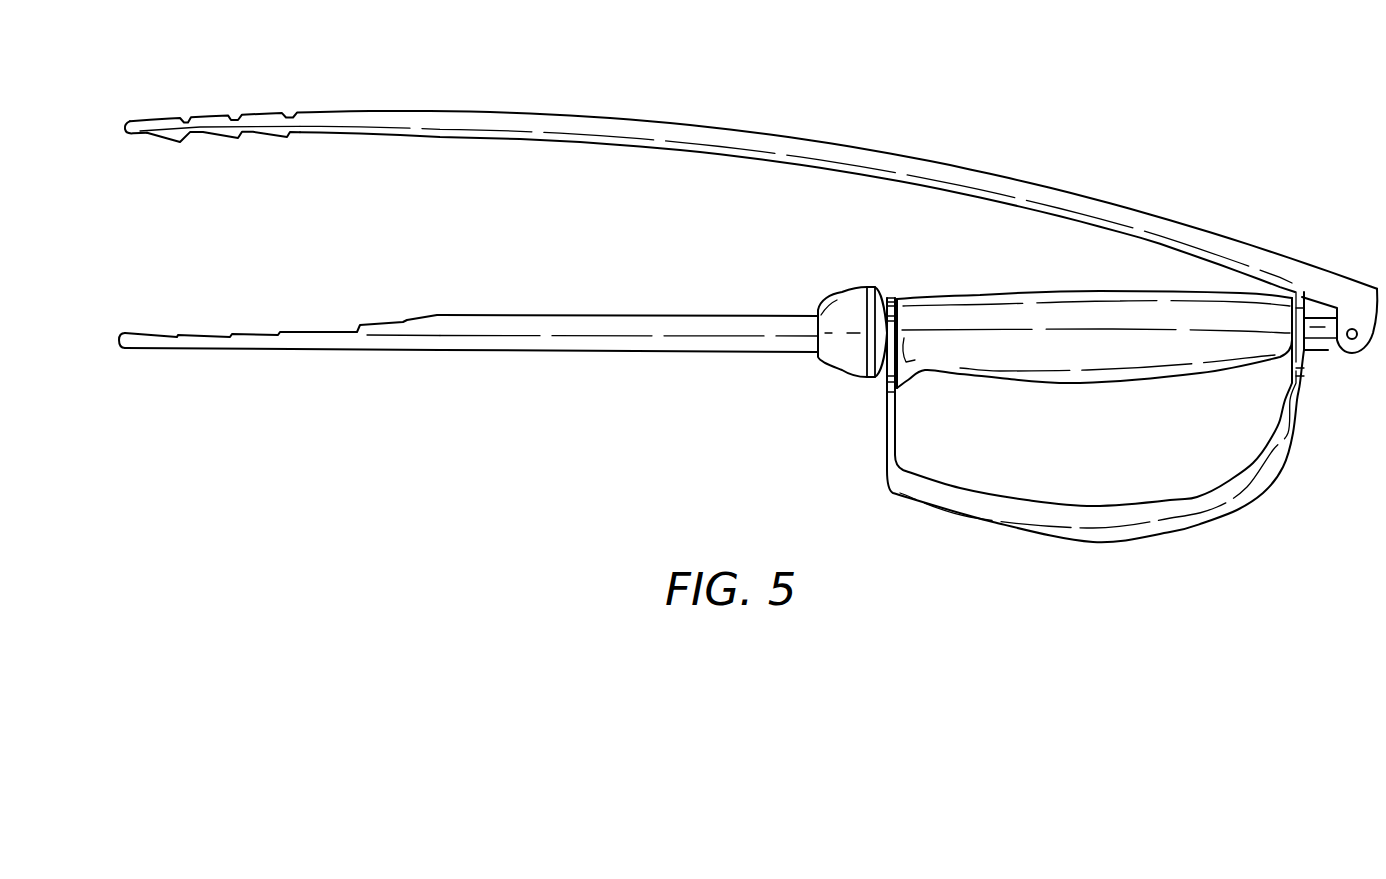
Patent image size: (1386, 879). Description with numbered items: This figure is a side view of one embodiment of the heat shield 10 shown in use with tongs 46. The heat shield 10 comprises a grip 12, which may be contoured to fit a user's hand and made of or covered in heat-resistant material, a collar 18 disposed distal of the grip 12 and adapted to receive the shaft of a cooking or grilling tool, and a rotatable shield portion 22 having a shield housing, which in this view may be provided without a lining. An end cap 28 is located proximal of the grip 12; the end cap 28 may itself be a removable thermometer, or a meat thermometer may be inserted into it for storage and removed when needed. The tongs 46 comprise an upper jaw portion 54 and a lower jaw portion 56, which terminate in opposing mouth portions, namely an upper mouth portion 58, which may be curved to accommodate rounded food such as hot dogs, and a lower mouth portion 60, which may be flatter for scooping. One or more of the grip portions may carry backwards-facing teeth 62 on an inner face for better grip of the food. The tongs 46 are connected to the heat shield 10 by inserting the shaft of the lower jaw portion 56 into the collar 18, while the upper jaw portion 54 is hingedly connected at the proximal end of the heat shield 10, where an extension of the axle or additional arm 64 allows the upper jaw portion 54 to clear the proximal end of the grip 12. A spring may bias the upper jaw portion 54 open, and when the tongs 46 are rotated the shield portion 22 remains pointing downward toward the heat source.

The heat shield 10 is at (1297, 505).
The grip 12 is at (1015, 298).
The collar 18 is at (847, 354).
The shield portion 22 is at (1168, 550).
The end cap 28 is at (738, 337).
The tongs 46 is at (316, 78).
The upper jaw portion 54 is at (594, 84).
The lower jaw portion 56 is at (552, 358).
The upper mouth portion 58 is at (128, 120).
The lower mouth portion 60 is at (122, 338).
The backwards-facing teeth 62 is at (231, 134).
The additional arm 64 is at (1322, 351).